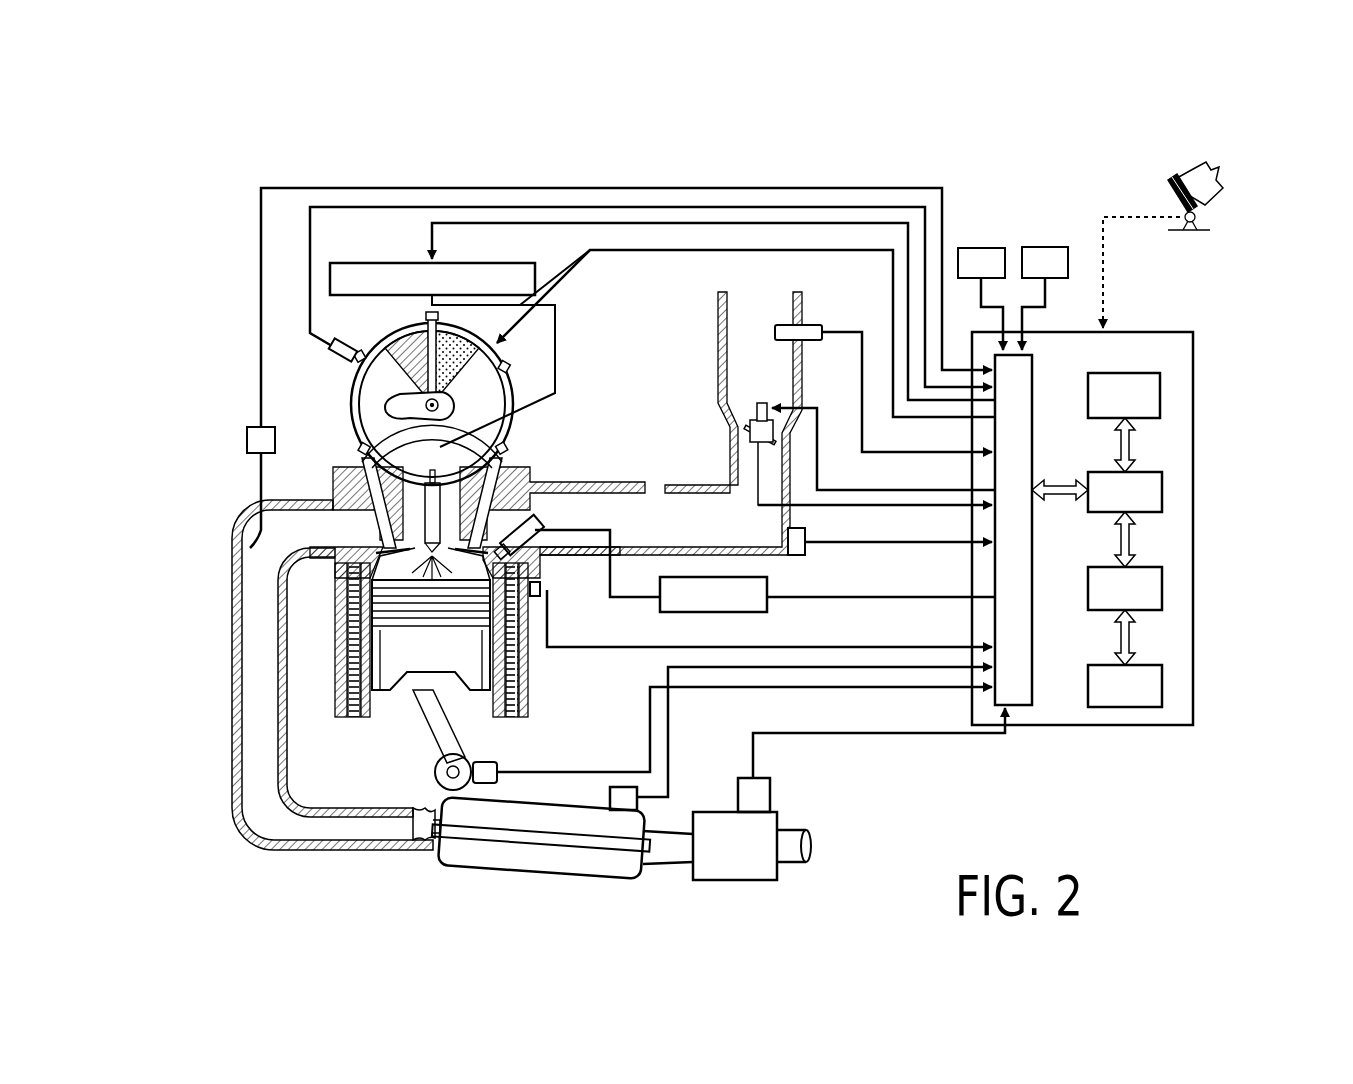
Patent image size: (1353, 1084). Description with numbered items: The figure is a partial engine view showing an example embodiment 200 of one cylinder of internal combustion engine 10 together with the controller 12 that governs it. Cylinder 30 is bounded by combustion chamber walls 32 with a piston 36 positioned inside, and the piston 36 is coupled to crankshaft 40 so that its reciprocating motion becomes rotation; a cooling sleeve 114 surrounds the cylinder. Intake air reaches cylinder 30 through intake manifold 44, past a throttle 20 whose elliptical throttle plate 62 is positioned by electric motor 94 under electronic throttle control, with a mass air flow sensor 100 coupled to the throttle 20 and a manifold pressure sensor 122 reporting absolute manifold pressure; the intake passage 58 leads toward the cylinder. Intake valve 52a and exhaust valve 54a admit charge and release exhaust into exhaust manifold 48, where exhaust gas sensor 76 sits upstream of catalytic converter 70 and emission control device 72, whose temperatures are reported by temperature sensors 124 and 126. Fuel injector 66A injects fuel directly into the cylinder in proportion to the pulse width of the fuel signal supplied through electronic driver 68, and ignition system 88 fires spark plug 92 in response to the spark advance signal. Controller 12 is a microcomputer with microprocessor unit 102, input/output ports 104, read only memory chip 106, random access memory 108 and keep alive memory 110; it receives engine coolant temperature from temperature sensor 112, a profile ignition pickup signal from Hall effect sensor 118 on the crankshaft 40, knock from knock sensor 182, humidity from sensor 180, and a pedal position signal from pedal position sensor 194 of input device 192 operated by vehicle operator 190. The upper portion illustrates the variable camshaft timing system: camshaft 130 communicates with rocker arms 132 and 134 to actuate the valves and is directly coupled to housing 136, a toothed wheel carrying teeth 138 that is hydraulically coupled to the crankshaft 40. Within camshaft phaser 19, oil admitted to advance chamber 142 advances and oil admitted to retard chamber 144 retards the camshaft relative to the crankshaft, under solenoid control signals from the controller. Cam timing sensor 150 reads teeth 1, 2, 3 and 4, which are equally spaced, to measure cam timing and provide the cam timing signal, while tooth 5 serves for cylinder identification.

The variable camshaft timing system 200 is at (176, 121).
The tooth 1 is at (425, 320).
The tooth 2 is at (507, 370).
The tooth 3 is at (456, 488).
The tooth 4 is at (358, 448).
The tooth 5 is at (356, 362).
The internal combustion engine 10 is at (556, 408).
The controller 12 is at (1150, 332).
The camshaft phaser 19 is at (576, 338).
The throttle 20 is at (742, 433).
The cylinder 30 is at (340, 632).
The combustion chamber walls 32 is at (372, 708).
The piston 36 is at (427, 662).
The crankshaft 40 is at (436, 778).
The intake manifold 44 is at (671, 423).
The exhaust manifold 48 is at (258, 562).
The intake valve 52a is at (478, 546).
The exhaust valve 54a is at (380, 544).
The intake passage 58 is at (748, 477).
The throttle plate 62 is at (755, 428).
The fuel injector 66A is at (540, 558).
The electronic driver 68 is at (770, 592).
The catalytic converter 70 is at (508, 804).
The emission control device 72 is at (718, 812).
The exhaust gas sensor 76 is at (247, 428).
The ignition system 88 is at (535, 280).
The spark plug 92 is at (428, 485).
The electric motor 94 is at (766, 402).
The mass air flow sensor 100 is at (806, 325).
The microprocessor unit 102 is at (1145, 472).
The input/output ports 104 is at (1032, 397).
The read only memory chip 106 is at (1118, 373).
The random access memory 108 is at (1145, 567).
The keep alive memory 110 is at (1145, 665).
The temperature sensor 112 is at (540, 593).
The cooling sleeve 114 is at (525, 690).
The Hall effect sensor 118 is at (486, 762).
The manifold pressure sensor 122 is at (806, 538).
The temperature sensor 124 is at (608, 793).
The temperature sensor 126 is at (771, 786).
The camshaft 130 is at (398, 407).
The rocker arm 132 is at (363, 465).
The rocker arm 134 is at (503, 464).
The housing 136 is at (352, 425).
The teeth 138 is at (529, 344).
The advance chamber 142 is at (458, 345).
The retard chamber 144 is at (402, 345).
The cam timing sensor 150 is at (332, 352).
The sensor 180 is at (981, 299).
The knock sensor 182 is at (1045, 298).
The vehicle operator 190 is at (1222, 178).
The input device 192 is at (1170, 195).
The pedal position sensor 194 is at (1200, 217).